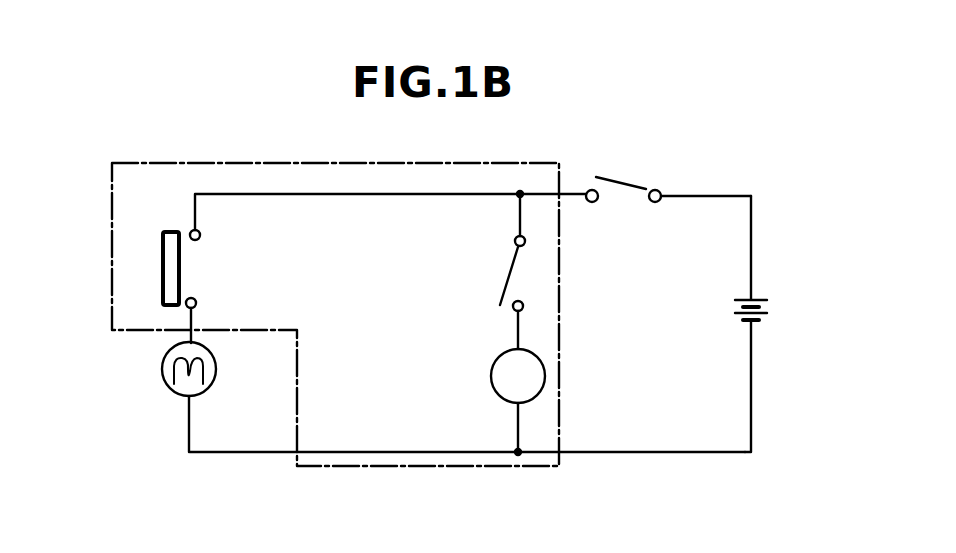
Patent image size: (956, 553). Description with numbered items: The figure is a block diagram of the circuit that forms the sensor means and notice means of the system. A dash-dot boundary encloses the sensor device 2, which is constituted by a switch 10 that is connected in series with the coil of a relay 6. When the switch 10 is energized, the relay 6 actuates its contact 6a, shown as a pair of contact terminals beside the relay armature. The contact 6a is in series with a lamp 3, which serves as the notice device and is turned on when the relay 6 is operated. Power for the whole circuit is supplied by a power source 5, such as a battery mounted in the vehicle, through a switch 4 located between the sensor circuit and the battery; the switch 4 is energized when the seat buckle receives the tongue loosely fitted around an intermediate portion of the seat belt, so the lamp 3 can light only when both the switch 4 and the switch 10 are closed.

The sensor device 2 is at (388, 163).
The lamp 3 is at (162, 372).
The switch 4 is at (614, 181).
The power source 5 is at (770, 312).
The relay 6 is at (546, 373).
The contact 6a is at (163, 270).
The switch 10 is at (524, 276).